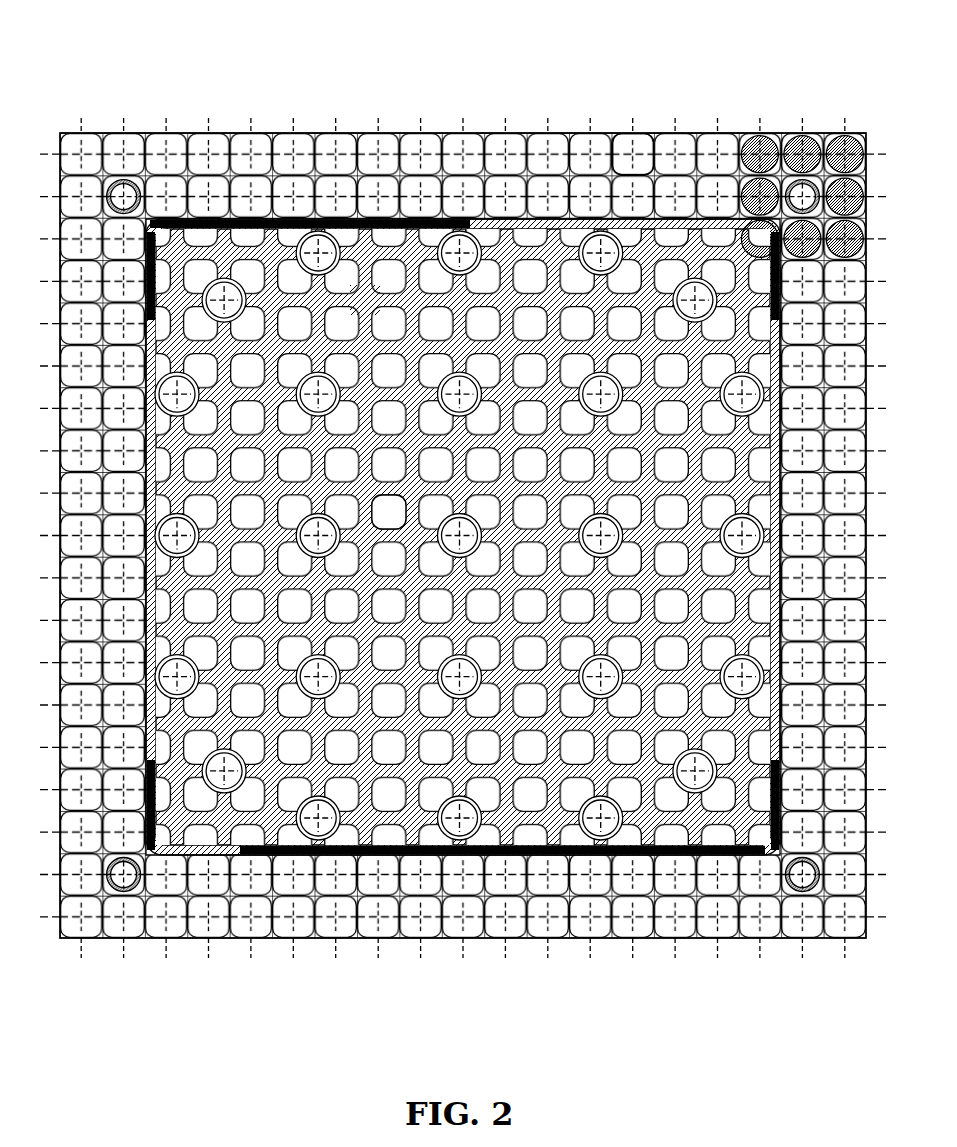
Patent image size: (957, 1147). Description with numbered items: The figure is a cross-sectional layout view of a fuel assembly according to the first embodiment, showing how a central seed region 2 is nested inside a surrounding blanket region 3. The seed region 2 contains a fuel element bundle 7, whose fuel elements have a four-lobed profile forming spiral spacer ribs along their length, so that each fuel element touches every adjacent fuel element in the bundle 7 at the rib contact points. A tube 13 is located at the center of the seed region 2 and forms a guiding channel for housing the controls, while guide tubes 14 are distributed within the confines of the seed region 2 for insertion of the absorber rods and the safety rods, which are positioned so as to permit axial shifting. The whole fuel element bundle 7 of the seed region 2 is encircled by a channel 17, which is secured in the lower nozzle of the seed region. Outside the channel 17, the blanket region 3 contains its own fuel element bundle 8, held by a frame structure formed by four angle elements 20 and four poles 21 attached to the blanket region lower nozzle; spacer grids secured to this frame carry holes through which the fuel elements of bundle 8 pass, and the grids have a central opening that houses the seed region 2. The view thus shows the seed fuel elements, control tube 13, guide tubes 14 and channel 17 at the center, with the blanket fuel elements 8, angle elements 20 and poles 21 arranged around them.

The seed region 2 is at (395, 508).
The blanket region 3 is at (630, 157).
The fuel element bundle 7 is at (365, 303).
The fuel element bundle 8 is at (756, 157).
The tube 13 is at (461, 535).
The guide tubes 14 is at (318, 820).
The channel 17 is at (490, 227).
The angle elements 20 is at (707, 852).
The poles 21 is at (120, 875).